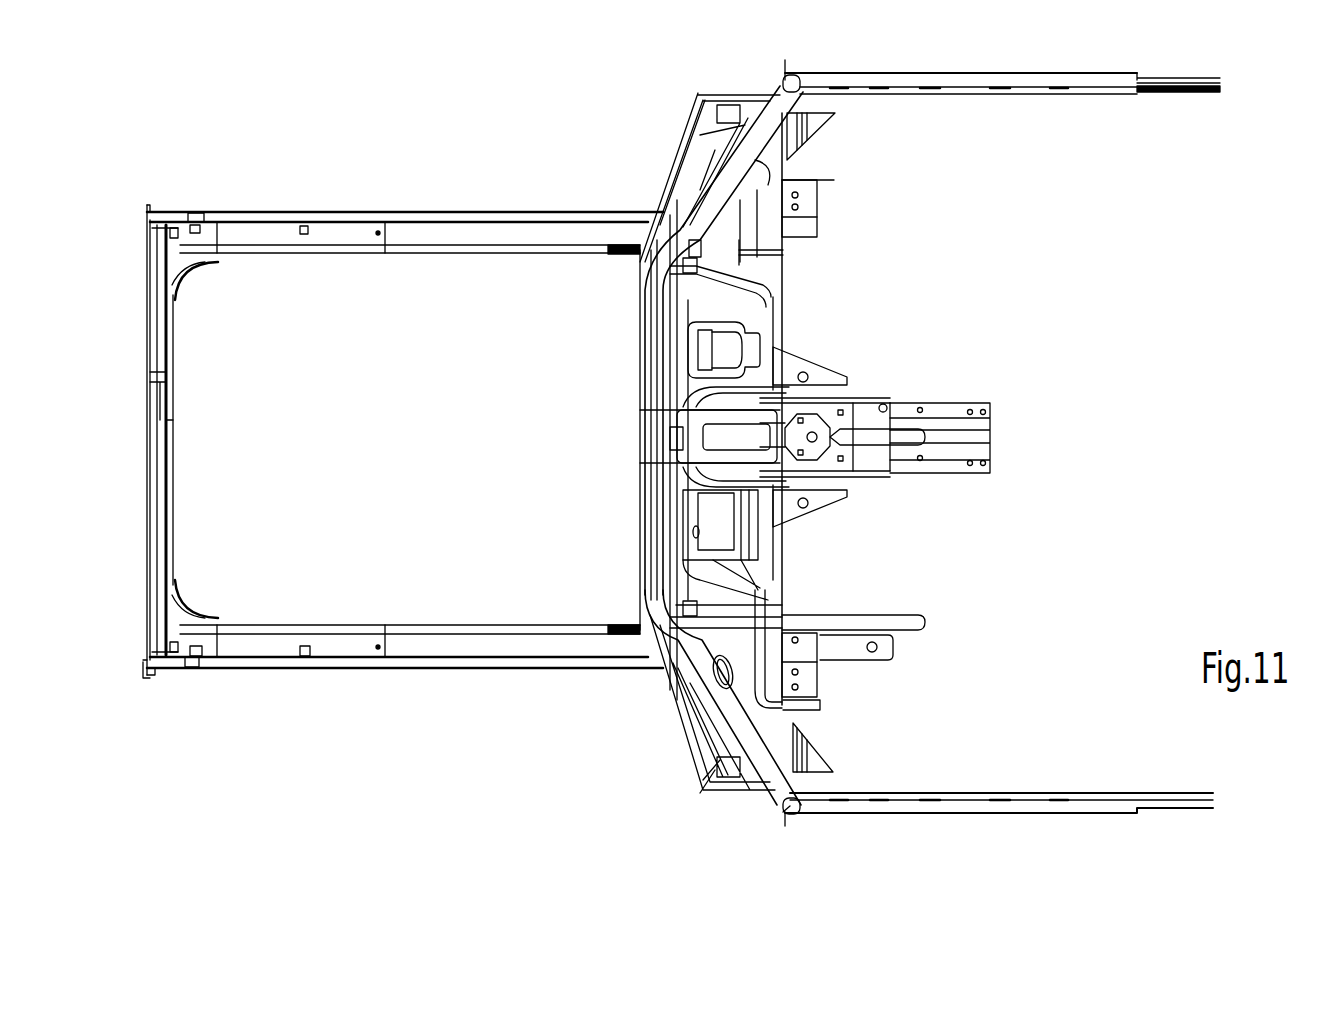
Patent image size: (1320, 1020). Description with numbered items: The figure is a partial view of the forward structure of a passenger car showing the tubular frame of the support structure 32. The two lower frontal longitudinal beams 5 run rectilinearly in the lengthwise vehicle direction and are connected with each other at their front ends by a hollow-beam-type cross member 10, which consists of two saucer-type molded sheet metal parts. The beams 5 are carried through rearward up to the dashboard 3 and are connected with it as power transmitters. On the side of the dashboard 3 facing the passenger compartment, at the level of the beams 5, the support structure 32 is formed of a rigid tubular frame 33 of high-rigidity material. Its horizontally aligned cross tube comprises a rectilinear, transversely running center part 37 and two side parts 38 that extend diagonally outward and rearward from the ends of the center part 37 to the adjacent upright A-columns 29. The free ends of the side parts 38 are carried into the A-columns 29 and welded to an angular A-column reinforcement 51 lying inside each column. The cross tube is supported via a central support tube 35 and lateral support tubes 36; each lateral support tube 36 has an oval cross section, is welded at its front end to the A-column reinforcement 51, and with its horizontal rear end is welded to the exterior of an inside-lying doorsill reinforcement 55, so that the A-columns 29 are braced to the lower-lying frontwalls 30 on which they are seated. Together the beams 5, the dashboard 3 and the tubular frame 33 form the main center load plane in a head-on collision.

The dashboard 3 is at (736, 312).
The lower frontal longitudinal beam 5 is at (437, 228).
The cross member 10 is at (160, 370).
The A-column 29 is at (822, 45).
The frontwall 30 is at (985, 93).
The support structure 32 is at (637, 403).
The rigid tubular frame 33 is at (668, 352).
The central support tube 35 is at (820, 397).
The lateral support tube 36 is at (890, 92).
The center part 37 is at (652, 538).
The side part 38 is at (730, 713).
The A-column reinforcement 51 is at (780, 815).
The doorsill reinforcement 55 is at (1027, 793).